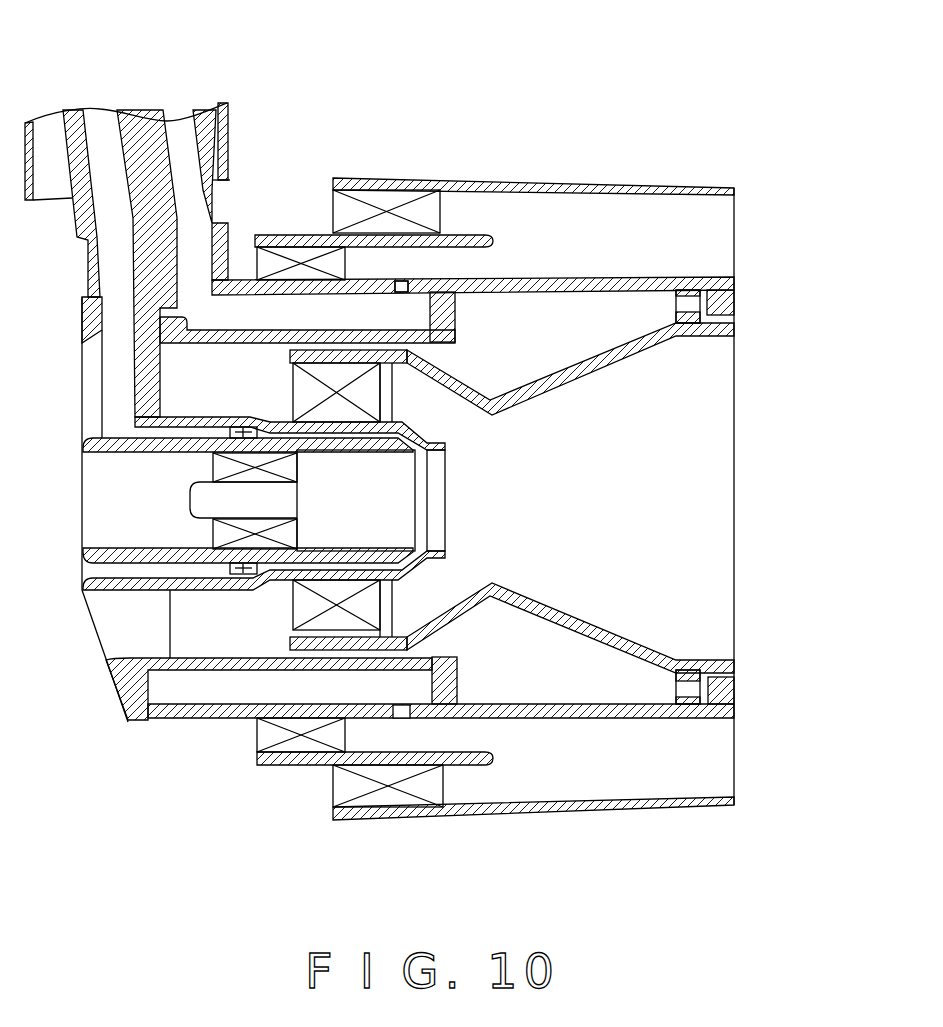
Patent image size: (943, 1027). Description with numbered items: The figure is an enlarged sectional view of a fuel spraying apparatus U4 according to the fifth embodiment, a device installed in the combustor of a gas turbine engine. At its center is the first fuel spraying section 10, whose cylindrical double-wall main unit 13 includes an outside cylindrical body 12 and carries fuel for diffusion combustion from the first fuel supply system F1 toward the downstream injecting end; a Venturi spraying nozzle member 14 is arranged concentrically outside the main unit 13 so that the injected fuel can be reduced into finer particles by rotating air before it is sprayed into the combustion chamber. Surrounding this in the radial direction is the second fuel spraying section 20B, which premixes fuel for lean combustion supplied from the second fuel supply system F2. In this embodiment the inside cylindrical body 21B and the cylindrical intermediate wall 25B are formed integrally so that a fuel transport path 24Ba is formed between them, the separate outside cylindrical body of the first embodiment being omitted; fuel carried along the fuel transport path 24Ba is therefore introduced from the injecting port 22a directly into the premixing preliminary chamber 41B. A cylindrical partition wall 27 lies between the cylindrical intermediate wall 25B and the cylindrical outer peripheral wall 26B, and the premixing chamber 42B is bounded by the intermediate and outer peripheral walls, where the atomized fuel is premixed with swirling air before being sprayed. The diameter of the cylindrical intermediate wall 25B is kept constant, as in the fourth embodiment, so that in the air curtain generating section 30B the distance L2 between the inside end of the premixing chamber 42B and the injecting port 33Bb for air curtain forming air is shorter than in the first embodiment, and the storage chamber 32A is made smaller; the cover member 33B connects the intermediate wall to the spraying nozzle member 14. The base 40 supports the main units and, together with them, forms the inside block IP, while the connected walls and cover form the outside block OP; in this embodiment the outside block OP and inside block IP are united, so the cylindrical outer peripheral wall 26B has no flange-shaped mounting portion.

The first fuel spraying section 10 is at (712, 476).
The outside cylindrical body 12 is at (440, 435).
The main unit 13 is at (80, 515).
The Venturi spraying nozzle member 14 is at (558, 400).
The second fuel spraying section 20B is at (747, 193).
The inside cylindrical body 21B is at (262, 345).
The injecting port 22a is at (400, 285).
The fuel transport path 24Ba is at (275, 313).
The cylindrical intermediate wall 25B is at (537, 277).
The cylindrical outer peripheral wall 26B is at (629, 188).
The cylindrical partition wall 27 is at (473, 235).
The air curtain generating section 30B is at (745, 292).
The storage chamber 32A is at (580, 342).
The cover member 33B is at (736, 300).
The injecting port 33Bb is at (736, 325).
The base 40 is at (98, 640).
The premixing preliminary chamber 41B is at (364, 258).
The premixing chamber 42B is at (705, 252).
The first fuel supply system F1 is at (105, 207).
The second fuel supply system F2 is at (183, 197).
The distance L2 is at (736, 277).
The fuel spraying apparatus U4 is at (700, 88).
The inside block IP is at (108, 727).
The outside block OP is at (790, 800).